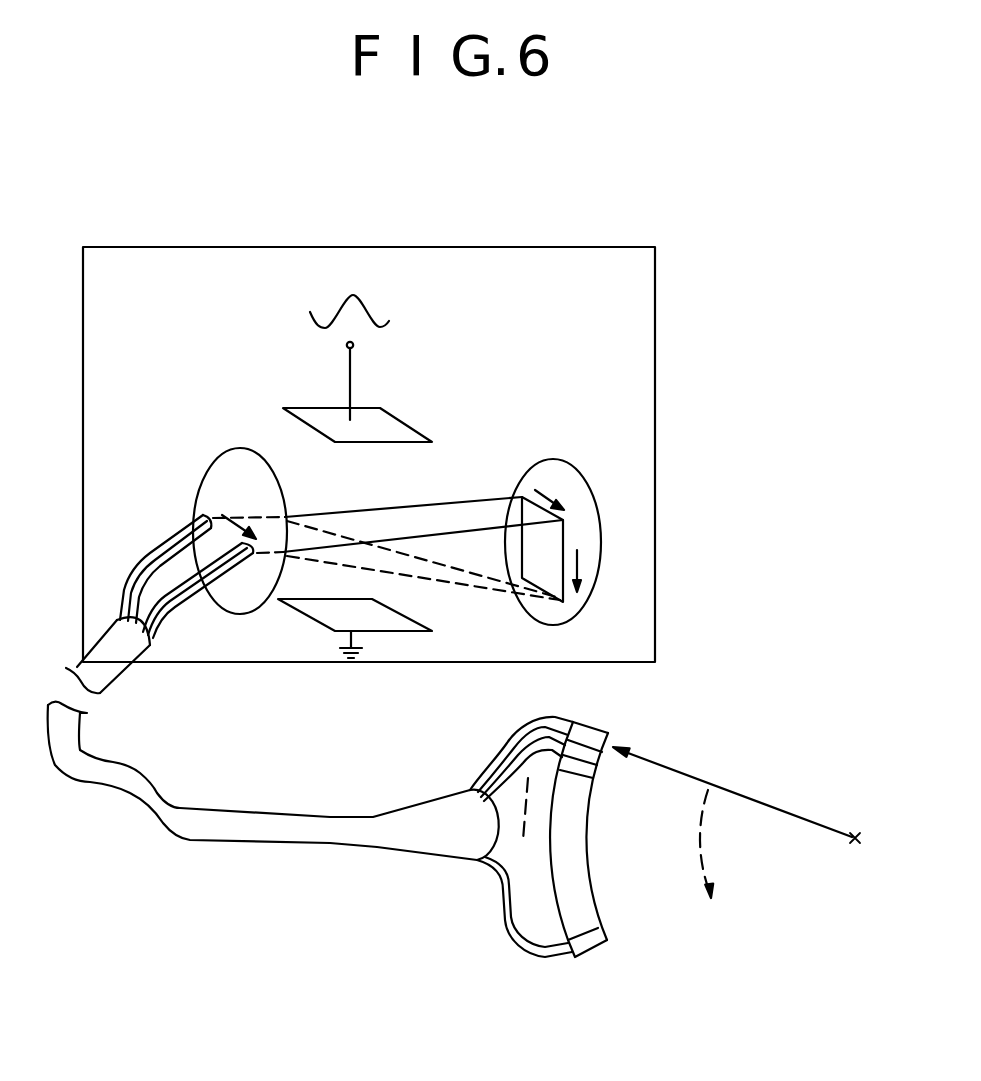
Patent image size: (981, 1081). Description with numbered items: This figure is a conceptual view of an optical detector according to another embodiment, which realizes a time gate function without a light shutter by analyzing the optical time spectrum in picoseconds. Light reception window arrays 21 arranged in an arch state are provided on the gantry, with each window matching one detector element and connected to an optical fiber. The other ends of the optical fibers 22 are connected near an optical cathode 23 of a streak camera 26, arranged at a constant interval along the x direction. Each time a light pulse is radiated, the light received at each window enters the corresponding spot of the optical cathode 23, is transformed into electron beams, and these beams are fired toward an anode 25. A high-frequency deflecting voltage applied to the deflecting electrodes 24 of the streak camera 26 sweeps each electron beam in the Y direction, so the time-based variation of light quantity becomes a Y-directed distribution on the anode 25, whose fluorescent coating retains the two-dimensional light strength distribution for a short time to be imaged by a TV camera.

The light reception window arrays 21 is at (596, 737).
The optical fibers 22 is at (502, 756).
The optical cathode 23 is at (208, 483).
The deflection plates 24 is at (392, 431).
The anode 25 is at (582, 490).
The streak camera 26 is at (627, 328).